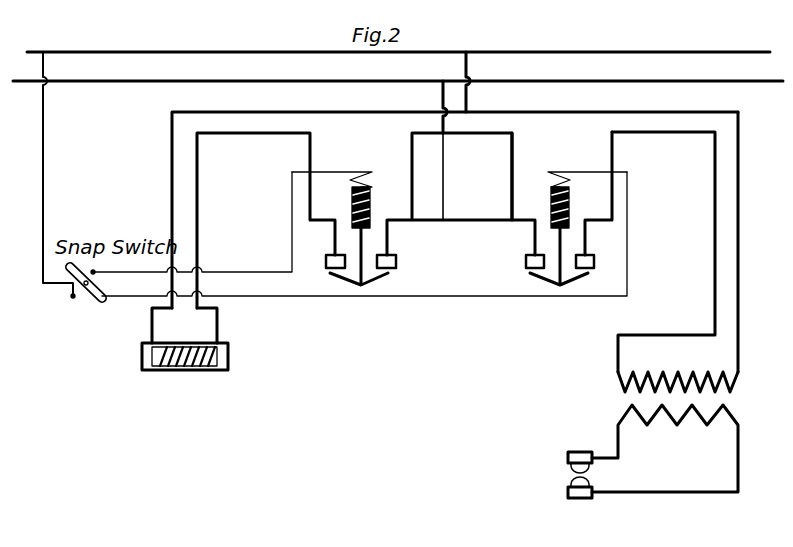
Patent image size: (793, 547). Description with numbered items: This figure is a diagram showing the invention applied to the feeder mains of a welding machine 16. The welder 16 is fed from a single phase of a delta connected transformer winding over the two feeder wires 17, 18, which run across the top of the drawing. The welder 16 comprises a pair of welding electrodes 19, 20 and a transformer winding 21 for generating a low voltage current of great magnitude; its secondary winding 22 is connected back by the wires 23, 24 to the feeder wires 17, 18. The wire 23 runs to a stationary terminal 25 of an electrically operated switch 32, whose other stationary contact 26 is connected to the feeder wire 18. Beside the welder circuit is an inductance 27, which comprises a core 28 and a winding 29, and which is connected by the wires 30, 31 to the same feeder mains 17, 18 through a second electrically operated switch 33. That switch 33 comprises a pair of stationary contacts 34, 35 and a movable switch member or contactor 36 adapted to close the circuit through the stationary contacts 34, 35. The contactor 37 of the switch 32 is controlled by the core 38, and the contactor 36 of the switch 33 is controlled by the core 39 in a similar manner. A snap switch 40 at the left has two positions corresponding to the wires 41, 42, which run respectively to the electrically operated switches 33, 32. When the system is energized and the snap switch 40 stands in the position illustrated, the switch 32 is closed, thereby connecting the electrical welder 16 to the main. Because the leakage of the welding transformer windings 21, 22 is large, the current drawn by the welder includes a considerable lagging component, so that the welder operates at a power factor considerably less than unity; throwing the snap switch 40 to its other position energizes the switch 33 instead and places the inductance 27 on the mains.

The welding machine 16 is at (556, 488).
The feeder wire 17 is at (124, 52).
The feeder wire 18 is at (117, 85).
The welding electrode 19 is at (568, 458).
The welding electrode 20 is at (574, 500).
The transformer winding 21 is at (707, 426).
The secondary winding 22 is at (618, 383).
The wire 23 is at (715, 225).
The wire 24 is at (738, 270).
The stationary terminal 25 is at (594, 261).
The stationary contact 26 is at (526, 262).
The inductance 27 is at (142, 361).
The core 28 is at (228, 357).
The winding 29 is at (194, 371).
The wire 30 is at (172, 183).
The wire 31 is at (197, 186).
The electrically operated switch 32 is at (558, 228).
The electrically operated switch 33 is at (402, 214).
The stationary contact 34 is at (327, 255).
The stationary contact 35 is at (396, 262).
The contactor 36 is at (388, 280).
The contactor 37 is at (548, 287).
The core 38 is at (551, 190).
The core 39 is at (372, 200).
The snap switch 40 is at (84, 296).
The wire 41 is at (246, 272).
The wire 42 is at (259, 297).